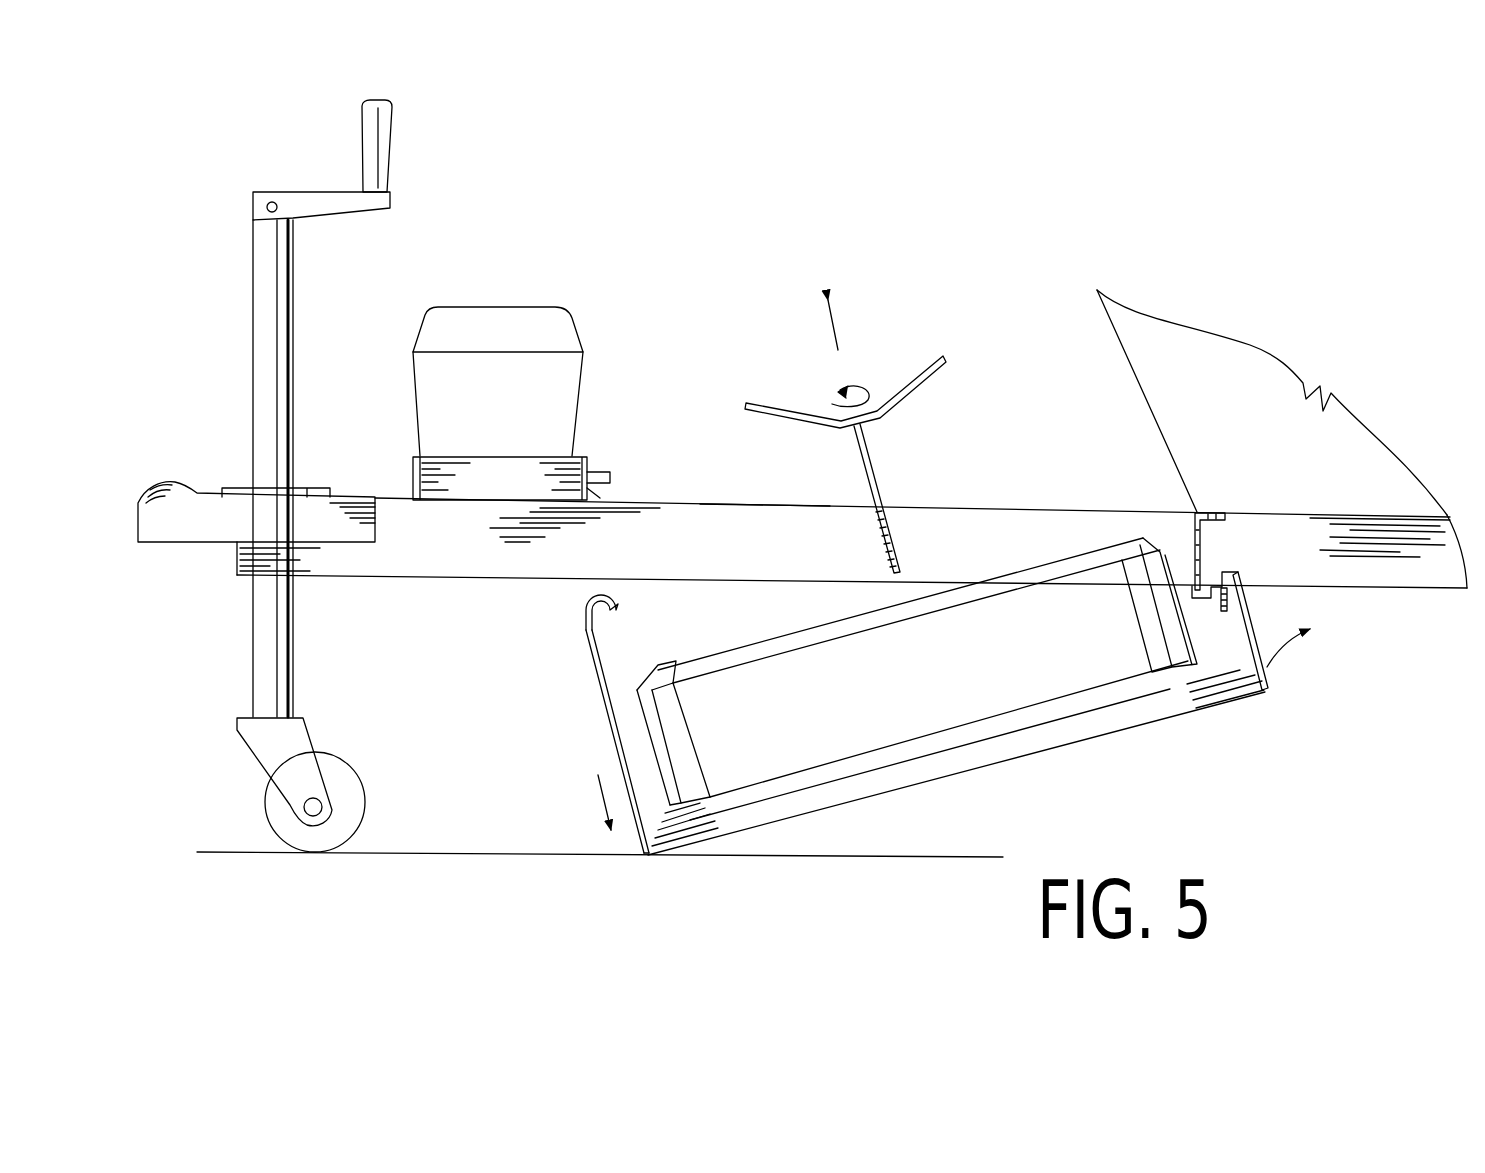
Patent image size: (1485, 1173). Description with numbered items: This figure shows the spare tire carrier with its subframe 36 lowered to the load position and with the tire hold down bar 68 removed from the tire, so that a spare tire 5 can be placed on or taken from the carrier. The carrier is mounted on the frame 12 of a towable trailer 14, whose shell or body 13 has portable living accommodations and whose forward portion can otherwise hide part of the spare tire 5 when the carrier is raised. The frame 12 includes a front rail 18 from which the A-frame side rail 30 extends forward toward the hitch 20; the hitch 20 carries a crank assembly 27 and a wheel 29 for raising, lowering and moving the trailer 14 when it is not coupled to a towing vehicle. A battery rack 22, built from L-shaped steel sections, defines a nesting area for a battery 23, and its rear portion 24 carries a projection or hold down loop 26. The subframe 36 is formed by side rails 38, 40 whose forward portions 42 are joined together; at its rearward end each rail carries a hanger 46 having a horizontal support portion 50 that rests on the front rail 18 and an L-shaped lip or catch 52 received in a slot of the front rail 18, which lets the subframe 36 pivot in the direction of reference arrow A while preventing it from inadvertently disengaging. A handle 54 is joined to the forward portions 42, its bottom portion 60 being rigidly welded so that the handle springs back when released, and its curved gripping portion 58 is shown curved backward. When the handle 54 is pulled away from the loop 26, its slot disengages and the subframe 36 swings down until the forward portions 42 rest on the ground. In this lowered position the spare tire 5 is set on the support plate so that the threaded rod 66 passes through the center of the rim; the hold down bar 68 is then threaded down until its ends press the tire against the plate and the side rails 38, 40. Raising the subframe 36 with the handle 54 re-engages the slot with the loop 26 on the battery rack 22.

The spare tire 5 is at (1077, 558).
The frame 12 is at (1428, 590).
The shell or body 13 is at (1105, 317).
The towable trailer 14 is at (1268, 318).
The front rail 18 is at (1193, 540).
The hitch 20 is at (155, 542).
The battery rack 22 is at (458, 477).
The battery 23 is at (503, 305).
The rear portion 24 is at (593, 498).
The hold down loop 26 is at (604, 478).
The crank assembly 27 is at (246, 325).
The wheel 29 is at (360, 785).
The side rail 30 is at (762, 507).
The subframe 36 is at (1128, 758).
The side rail 38 is at (932, 783).
The side rail 40 is at (1018, 760).
The forward portion 42 is at (690, 853).
The hanger 46 is at (1247, 610).
The horizontal support portion 50 is at (1215, 570).
The L-shaped lip or catch 52 is at (1212, 600).
The handle 54 is at (597, 680).
The curved gripping portion 58 is at (580, 607).
The bottom portion 60 is at (633, 838).
The threaded rod 66 is at (882, 482).
The hold down bar 68 is at (940, 381).
The reference arrow A is at (1292, 658).